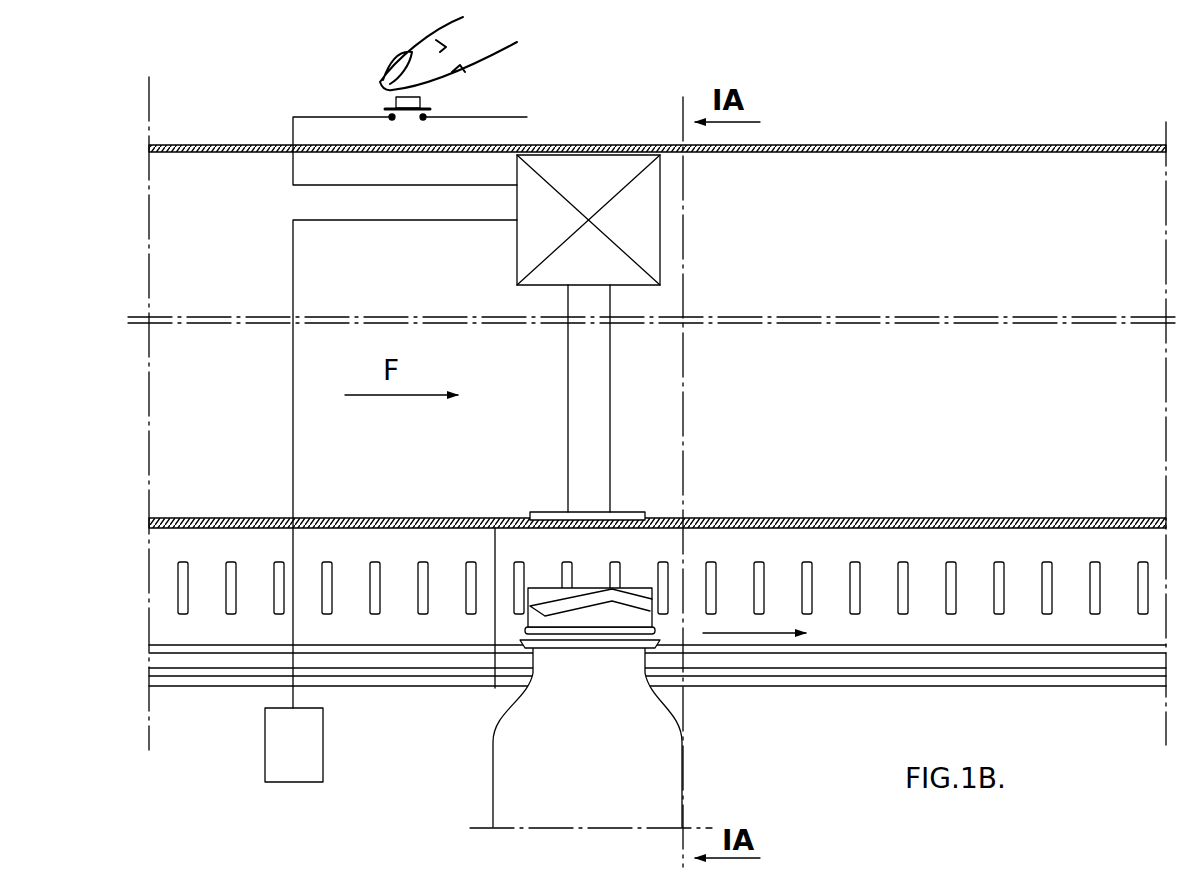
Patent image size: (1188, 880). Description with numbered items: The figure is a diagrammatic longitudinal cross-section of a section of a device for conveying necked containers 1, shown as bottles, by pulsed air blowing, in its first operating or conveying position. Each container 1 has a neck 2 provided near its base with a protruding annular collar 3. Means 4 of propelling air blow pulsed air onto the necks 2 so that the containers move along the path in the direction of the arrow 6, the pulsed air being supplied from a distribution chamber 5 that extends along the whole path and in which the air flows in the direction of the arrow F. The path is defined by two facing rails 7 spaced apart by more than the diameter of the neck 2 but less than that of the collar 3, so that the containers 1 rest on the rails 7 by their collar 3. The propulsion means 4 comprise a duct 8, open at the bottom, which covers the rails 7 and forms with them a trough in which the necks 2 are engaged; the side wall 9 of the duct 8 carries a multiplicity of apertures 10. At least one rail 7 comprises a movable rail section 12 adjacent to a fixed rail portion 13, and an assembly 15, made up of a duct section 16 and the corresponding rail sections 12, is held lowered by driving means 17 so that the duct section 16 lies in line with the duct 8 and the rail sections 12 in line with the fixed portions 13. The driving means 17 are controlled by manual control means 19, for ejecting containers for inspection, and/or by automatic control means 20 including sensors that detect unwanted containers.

The container 1 is at (482, 782).
The neck 2 is at (612, 606).
The annular collar 3 is at (572, 650).
The means of propelling air 4 is at (731, 517).
The distribution chamber 5 is at (908, 377).
The arrow of direction of movement 6 is at (766, 636).
The rail 7 is at (876, 662).
The duct 8 is at (823, 519).
The side wall 9 is at (1025, 568).
The apertures 10 is at (996, 578).
The movable rail section 12 is at (516, 672).
The fixed rail portion 13 is at (489, 661).
The movable assembly 15 is at (512, 516).
The duct section 16 is at (659, 516).
The driving means 17 is at (594, 170).
The manual control means 19 is at (425, 142).
The automatic control means 20 is at (310, 754).